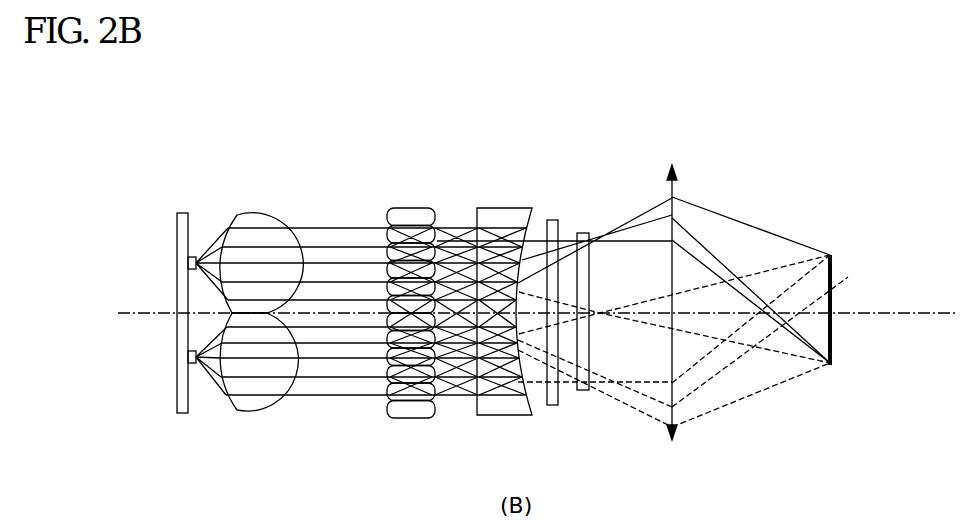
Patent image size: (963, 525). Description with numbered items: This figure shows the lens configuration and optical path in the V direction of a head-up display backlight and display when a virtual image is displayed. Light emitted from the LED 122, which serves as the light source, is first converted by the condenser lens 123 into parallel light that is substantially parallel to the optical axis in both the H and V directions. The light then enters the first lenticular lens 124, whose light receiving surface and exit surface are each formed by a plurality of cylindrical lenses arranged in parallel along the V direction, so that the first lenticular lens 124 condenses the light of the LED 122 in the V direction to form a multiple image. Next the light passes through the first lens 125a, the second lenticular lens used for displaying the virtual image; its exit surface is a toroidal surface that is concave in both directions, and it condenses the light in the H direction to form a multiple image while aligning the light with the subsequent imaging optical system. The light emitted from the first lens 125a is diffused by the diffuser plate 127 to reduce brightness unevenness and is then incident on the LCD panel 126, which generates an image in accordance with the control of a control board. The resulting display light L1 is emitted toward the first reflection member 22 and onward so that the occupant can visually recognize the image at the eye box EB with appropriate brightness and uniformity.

The LED 122 is at (192, 257).
The condenser lens 123 is at (250, 220).
The first lenticular lens 124 is at (412, 217).
The first lens 125a is at (503, 213).
The diffuser plate 127 is at (554, 220).
The LCD panel 126 is at (586, 233).
The first reflection member 22 is at (681, 183).
The first display light L1 is at (760, 227).
The eye box EB is at (833, 293).